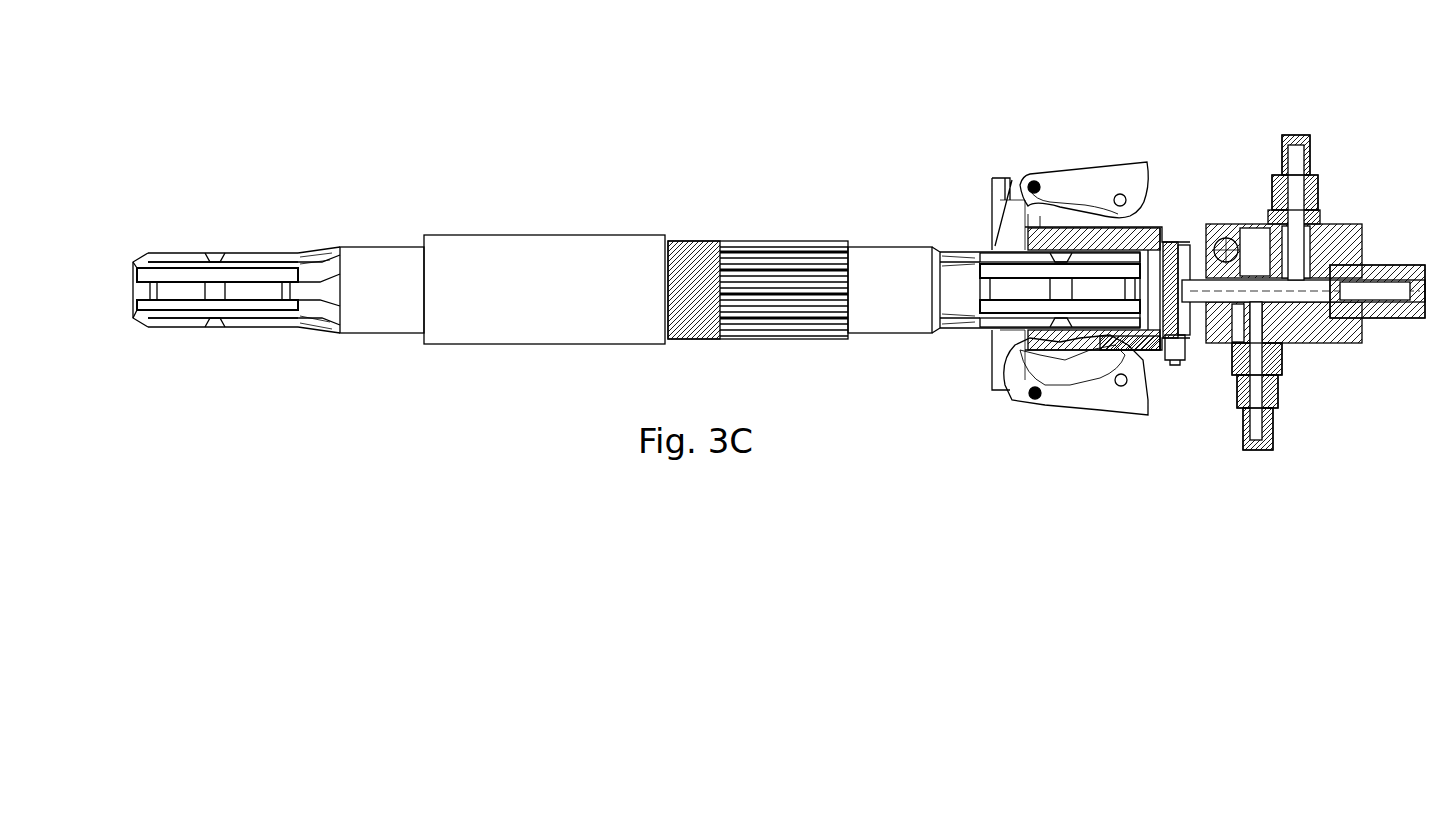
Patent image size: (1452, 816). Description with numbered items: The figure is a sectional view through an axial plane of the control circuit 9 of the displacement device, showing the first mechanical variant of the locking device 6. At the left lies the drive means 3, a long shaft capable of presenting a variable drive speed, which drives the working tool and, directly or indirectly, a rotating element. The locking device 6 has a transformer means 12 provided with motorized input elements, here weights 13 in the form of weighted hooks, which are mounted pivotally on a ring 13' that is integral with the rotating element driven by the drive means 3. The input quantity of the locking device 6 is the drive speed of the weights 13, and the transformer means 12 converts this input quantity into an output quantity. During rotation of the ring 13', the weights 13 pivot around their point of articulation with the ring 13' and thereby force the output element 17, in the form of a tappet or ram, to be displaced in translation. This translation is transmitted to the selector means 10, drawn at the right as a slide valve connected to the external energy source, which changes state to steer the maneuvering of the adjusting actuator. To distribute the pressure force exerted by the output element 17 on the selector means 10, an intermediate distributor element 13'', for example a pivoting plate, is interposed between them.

The drive means 3 is at (258, 345).
The locking device 6 is at (1195, 303).
The circuit 9 is at (1338, 496).
The selector means 10 is at (1316, 335).
The transformer means 12 is at (1077, 148).
The weights 13 is at (1097, 347).
The ring 13' is at (1001, 338).
The intermediate distributor element 13'' is at (1165, 370).
The output element 17 is at (1117, 345).